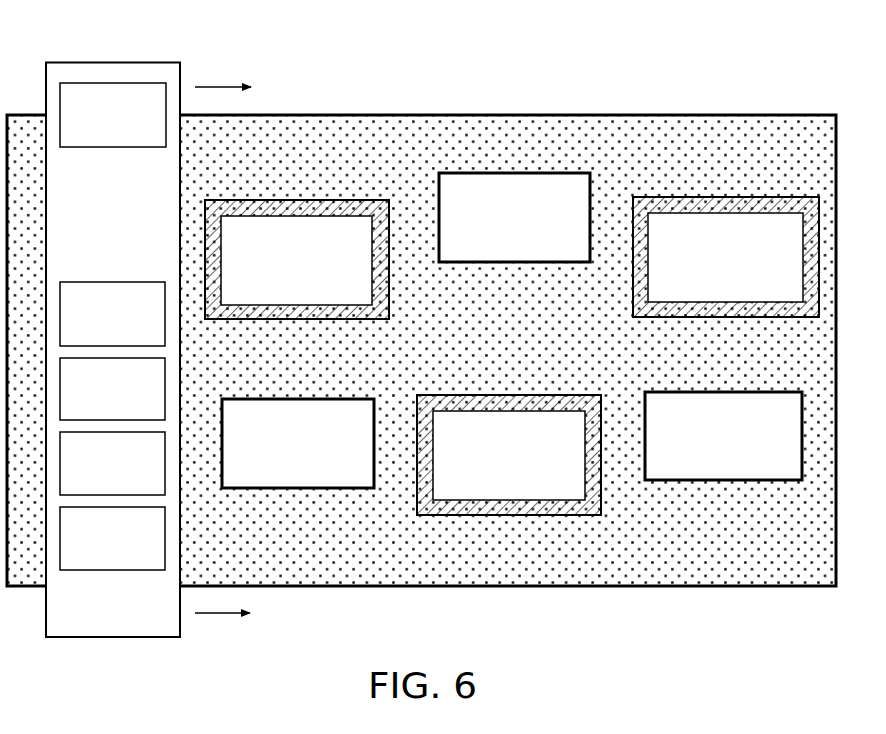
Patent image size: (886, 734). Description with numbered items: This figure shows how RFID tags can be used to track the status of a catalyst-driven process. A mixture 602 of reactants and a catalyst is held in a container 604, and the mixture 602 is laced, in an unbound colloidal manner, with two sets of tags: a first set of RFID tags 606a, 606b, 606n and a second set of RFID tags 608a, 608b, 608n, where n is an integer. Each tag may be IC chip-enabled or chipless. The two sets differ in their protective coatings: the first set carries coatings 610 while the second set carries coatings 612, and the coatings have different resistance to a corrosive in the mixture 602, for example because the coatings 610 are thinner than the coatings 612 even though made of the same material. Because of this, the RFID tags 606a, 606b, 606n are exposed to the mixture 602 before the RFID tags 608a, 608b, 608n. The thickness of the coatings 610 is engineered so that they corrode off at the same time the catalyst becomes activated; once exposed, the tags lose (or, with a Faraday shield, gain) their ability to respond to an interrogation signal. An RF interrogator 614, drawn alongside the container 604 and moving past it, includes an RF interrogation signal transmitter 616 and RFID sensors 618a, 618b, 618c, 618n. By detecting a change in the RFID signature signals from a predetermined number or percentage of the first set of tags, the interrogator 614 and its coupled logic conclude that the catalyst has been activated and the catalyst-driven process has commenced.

The mixture 602 is at (802, 565).
The container 604 is at (583, 115).
The RFID tag 606a is at (298, 471).
The RFID tag 606b is at (483, 244).
The RFID tag 606n is at (755, 463).
The RFID tag 608a is at (297, 232).
The RFID tag 608b is at (478, 483).
The RFID tag 608n is at (693, 287).
The coating 610 is at (278, 488).
The coating 612 is at (337, 200).
The RF interrogator 614 is at (112, 62).
The RF interrogation signal transmitter 616 is at (91, 127).
The RFID sensor 618a is at (140, 327).
The RFID sensor 618b is at (140, 403).
The RFID sensor 618c is at (140, 477).
The RFID sensor 618n is at (140, 549).